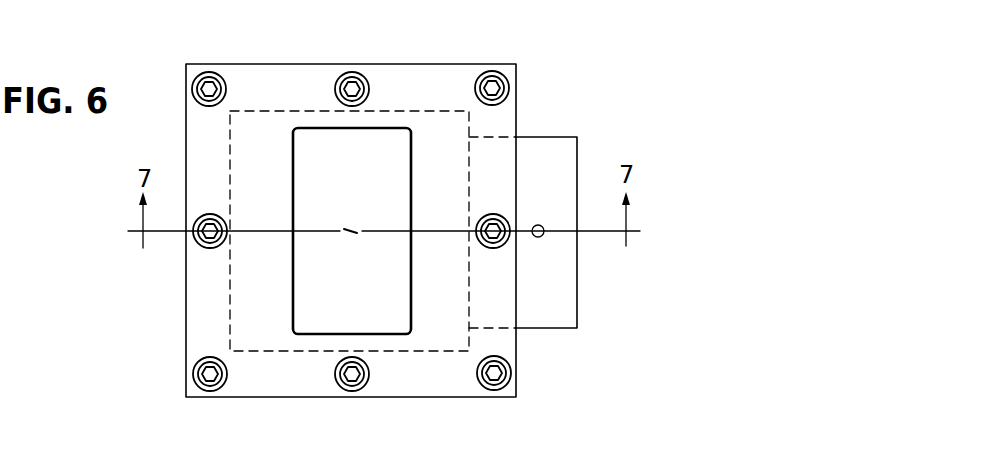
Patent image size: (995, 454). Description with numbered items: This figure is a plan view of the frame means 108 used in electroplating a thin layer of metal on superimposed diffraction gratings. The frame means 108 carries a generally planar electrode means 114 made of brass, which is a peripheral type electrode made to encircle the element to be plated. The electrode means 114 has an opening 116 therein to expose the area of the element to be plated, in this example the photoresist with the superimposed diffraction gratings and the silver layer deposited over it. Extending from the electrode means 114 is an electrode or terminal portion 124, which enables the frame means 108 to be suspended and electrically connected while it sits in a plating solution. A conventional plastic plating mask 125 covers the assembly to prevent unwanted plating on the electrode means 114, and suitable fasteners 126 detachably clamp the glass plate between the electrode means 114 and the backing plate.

The frame means 108 is at (592, 325).
The electrode means 114 is at (423, 340).
The opening 116 is at (318, 334).
The electrode or terminal portion 124 is at (555, 147).
The plastic plating mask 125 is at (289, 80).
The fasteners 126 is at (482, 78).